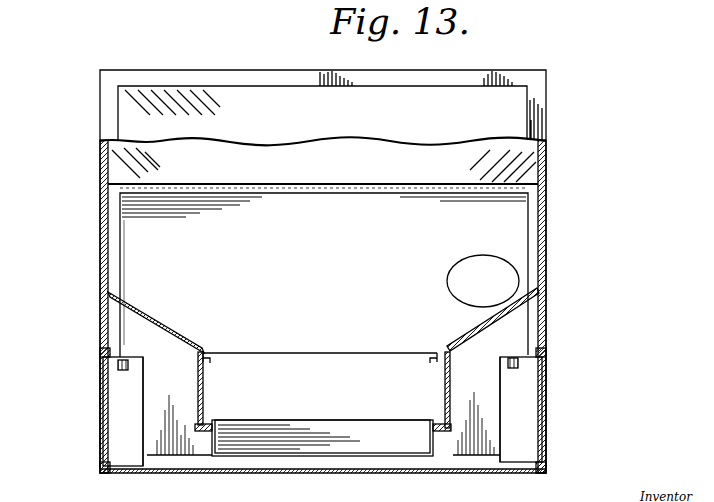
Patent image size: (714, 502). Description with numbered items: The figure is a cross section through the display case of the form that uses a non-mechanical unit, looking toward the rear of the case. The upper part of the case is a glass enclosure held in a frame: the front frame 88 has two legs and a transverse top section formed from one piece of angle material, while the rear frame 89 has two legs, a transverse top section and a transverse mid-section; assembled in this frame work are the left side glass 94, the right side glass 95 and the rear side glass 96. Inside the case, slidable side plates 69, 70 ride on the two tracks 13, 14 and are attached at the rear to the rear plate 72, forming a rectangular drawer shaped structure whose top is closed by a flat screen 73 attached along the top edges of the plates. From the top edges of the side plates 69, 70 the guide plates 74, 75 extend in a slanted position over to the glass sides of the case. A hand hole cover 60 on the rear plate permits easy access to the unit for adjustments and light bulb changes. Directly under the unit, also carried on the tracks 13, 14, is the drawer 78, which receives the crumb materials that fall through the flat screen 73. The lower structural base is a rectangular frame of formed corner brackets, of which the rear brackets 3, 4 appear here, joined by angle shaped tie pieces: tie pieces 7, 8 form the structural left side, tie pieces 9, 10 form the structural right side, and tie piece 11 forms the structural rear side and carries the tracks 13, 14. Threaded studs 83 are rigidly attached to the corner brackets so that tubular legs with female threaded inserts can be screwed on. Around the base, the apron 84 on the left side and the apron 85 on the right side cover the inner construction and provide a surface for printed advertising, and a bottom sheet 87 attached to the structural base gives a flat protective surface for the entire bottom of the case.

The front frame 88 is at (254, 69).
The left side glass 94 is at (107, 172).
The right side glass 95 is at (548, 180).
The rear frame 89 is at (249, 183).
The rear side glass 96 is at (324, 174).
The rear plate 72 is at (324, 271).
The hand hole cover 60 is at (482, 257).
The guide plate 74 is at (174, 333).
The guide plate 75 is at (468, 333).
The flat screen 73 is at (302, 349).
The side plate 69 is at (205, 400).
The side plate 70 is at (452, 386).
The track 13 is at (210, 428).
The track 14 is at (440, 426).
The drawer 78 is at (322, 438).
The tie piece 11 is at (182, 476).
The threaded stud 83 is at (322, 411).
The corner bracket 4 is at (143, 392).
The corner bracket 3 is at (509, 409).
The tie piece 7 is at (100, 358).
The tie piece 9 is at (548, 357).
The apron 84 is at (98, 426).
The apron 85 is at (548, 414).
The bottom sheet 87 is at (257, 476).
The tie piece 8 is at (100, 477).
The tie piece 10 is at (548, 468).